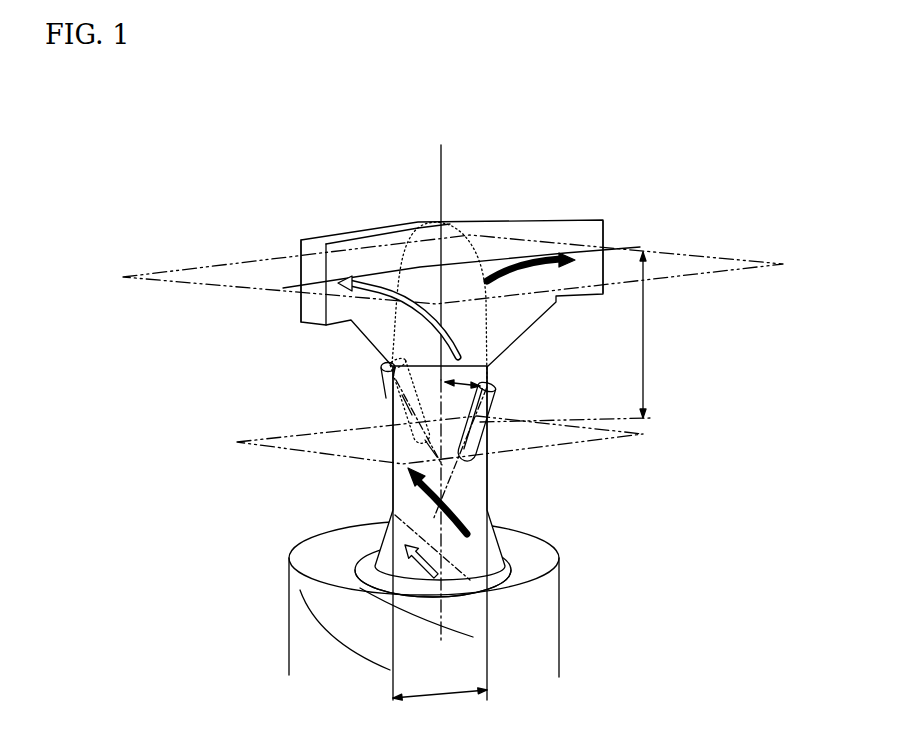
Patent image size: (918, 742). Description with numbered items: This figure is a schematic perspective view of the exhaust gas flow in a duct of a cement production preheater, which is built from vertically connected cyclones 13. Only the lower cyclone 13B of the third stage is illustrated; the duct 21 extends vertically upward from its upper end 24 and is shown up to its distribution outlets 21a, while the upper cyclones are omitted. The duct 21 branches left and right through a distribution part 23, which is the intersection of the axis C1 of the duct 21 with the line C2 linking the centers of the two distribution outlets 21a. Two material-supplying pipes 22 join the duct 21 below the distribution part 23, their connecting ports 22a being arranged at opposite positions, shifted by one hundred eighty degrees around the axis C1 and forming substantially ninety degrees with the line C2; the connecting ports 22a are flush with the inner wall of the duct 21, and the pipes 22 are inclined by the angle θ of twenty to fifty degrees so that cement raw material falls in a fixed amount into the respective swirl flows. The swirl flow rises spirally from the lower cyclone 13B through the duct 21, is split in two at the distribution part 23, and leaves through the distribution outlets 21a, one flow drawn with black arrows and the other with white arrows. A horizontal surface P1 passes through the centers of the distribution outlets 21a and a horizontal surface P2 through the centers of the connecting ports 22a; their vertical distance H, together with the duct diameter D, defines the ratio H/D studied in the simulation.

The cyclone 13 is at (518, 599).
The lower cyclone 13B is at (552, 600).
The duct 21 is at (487, 492).
The distribution outlet 21a is at (308, 273).
The material-supplying pipe 22 is at (386, 370).
The connecting port 22a is at (405, 435).
The distribution part 23 is at (443, 270).
The upper end 24 is at (322, 552).
The axis of the duct C1 is at (440, 182).
The line linking the centers of the distribution outlets C2 is at (283, 288).
The horizontal surface passing through centers of the distribution outlets P1 is at (683, 260).
The horizontal surface passing through centers of the connecting ports P2 is at (280, 440).
The vertical distance H is at (651, 335).
The diameter of the duct D is at (440, 683).